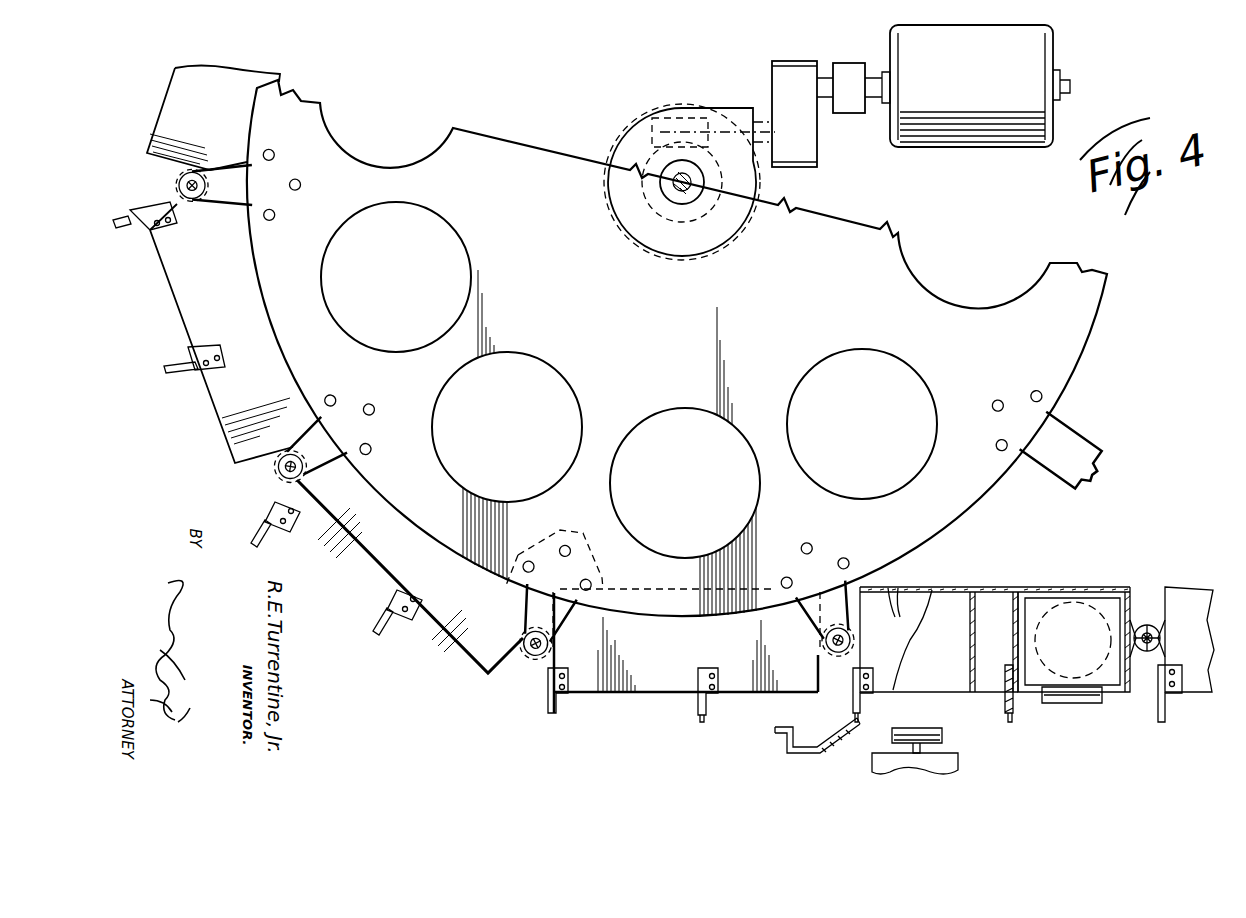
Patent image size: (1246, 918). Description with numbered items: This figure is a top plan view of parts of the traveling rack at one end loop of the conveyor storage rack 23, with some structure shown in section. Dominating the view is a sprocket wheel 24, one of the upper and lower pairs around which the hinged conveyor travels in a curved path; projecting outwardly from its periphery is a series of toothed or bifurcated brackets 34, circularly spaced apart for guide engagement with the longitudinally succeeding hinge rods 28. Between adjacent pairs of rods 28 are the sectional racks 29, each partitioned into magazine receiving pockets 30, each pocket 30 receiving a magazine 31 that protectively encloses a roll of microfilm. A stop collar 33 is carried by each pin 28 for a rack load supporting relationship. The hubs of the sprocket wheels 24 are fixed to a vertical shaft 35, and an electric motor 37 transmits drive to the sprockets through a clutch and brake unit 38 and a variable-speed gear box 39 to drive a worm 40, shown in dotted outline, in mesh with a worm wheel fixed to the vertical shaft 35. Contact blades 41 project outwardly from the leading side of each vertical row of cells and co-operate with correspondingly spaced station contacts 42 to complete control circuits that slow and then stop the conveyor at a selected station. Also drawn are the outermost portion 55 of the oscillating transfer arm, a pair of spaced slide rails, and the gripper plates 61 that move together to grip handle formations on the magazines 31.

The conveyor storage rack 23 is at (1195, 585).
The sprocket wheel 24 is at (1073, 347).
The rack section connecting rod 28 is at (283, 473).
The sectional rack 29 is at (447, 625).
The magazine receiving pocket 30 is at (950, 598).
The magazine 31 is at (1065, 610).
The stop collar 33 is at (533, 657).
The bifurcated bracket 34 is at (317, 446).
The vertical shaft 35 is at (682, 195).
The electric motor 37 is at (978, 130).
The clutch and brake unit 38 is at (848, 63).
The variable-speed gear box 39 is at (793, 61).
The worm 40 is at (640, 140).
The contact blade 41 is at (703, 717).
The station contact 42 is at (857, 735).
The outermost arm portion 55 is at (958, 760).
The gripper plate 61 is at (942, 735).